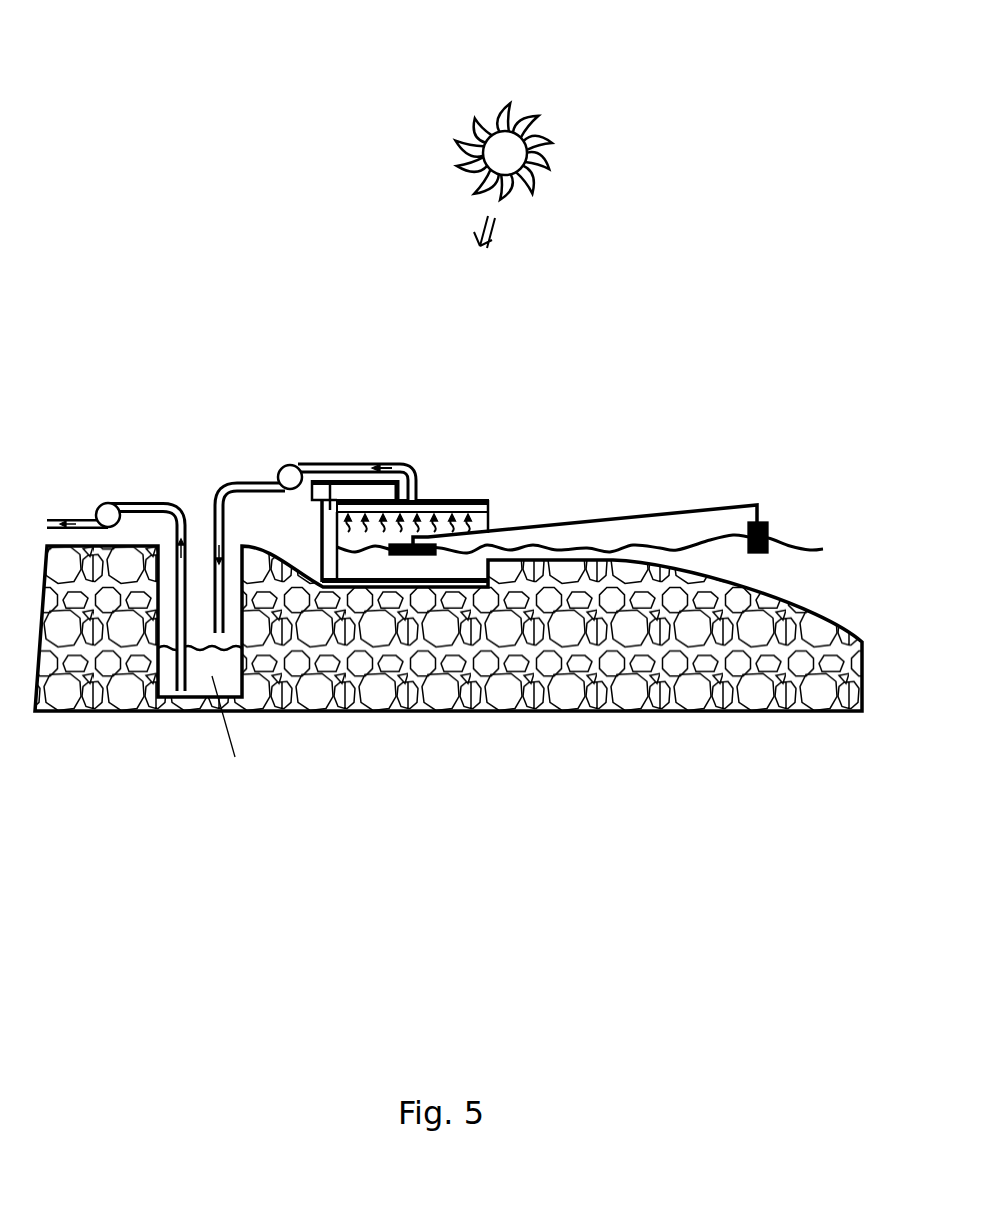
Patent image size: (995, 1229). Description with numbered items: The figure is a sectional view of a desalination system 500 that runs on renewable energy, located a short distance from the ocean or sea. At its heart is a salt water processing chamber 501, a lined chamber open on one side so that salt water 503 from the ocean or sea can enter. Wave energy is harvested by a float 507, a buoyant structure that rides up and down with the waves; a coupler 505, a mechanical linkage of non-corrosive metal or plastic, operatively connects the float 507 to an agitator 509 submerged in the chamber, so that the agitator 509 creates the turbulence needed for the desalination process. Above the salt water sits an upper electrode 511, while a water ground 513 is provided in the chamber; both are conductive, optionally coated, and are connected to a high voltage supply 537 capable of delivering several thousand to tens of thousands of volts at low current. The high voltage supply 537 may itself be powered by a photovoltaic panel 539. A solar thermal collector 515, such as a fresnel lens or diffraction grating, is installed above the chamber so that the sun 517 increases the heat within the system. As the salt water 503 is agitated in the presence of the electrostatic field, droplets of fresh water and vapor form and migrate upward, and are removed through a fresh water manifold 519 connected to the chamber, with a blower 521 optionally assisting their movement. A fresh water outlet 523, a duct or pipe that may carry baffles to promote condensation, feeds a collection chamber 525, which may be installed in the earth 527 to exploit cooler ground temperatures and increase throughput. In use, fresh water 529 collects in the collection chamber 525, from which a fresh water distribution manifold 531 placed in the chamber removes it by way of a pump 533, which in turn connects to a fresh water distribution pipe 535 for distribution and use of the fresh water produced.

The solar desalination system 500 is at (178, 100).
The salt water processing chamber 501 is at (610, 494).
The salt water 503 is at (610, 553).
The coupler 505 is at (727, 508).
The float 507 is at (768, 523).
The agitator 509 is at (403, 556).
The upper electrode 511 is at (488, 512).
The water ground 513 is at (413, 582).
The solar thermal collector 515 is at (432, 500).
The sun 517 is at (483, 117).
The fresh water manifold 519 is at (407, 470).
The blower 521 is at (283, 466).
The fresh water outlet 523 is at (243, 650).
The collection chamber 525 is at (198, 508).
The earth 527 is at (68, 698).
The fresh water 529 is at (172, 678).
The fresh water distribution manifold 531 is at (142, 504).
The pump 533 is at (107, 504).
The fresh water distribution pipe 535 is at (52, 519).
The high voltage supply 537 is at (320, 486).
The photovoltaic panel 539 is at (358, 480).